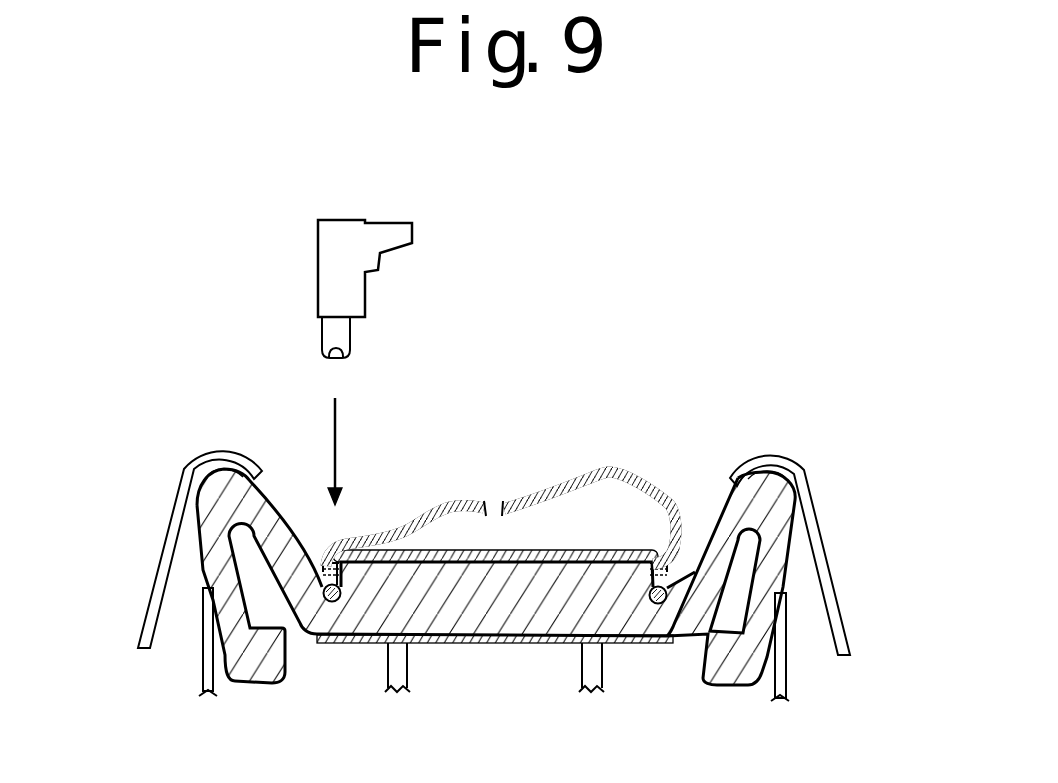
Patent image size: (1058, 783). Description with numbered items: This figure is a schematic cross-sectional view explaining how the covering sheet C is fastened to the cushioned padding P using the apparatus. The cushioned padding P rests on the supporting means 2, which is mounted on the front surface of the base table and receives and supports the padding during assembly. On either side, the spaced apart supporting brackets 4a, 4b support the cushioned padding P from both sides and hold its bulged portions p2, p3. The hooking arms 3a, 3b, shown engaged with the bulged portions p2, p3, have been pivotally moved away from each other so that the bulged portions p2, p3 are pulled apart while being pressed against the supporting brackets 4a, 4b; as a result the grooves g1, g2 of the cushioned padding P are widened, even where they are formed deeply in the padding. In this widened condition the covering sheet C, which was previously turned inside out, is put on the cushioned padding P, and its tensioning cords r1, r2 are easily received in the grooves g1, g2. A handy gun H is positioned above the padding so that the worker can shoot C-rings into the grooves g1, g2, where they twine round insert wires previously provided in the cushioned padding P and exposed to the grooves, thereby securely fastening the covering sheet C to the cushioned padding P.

The supporting means 2 is at (510, 645).
The cushioned padding P is at (723, 683).
The tensioning cord r1 is at (656, 602).
The tensioning cord r2 is at (337, 575).
The groove g1 is at (686, 542).
The groove g2 is at (322, 562).
The covering sheet C is at (570, 483).
The hooking arm 3a is at (813, 488).
The hooking arm 3b is at (172, 496).
The bulged portion p2 is at (778, 472).
The bulged portion p3 is at (214, 468).
The supporting bracket 4a is at (787, 667).
The supporting bracket 4b is at (202, 662).
The handy gun H is at (346, 233).